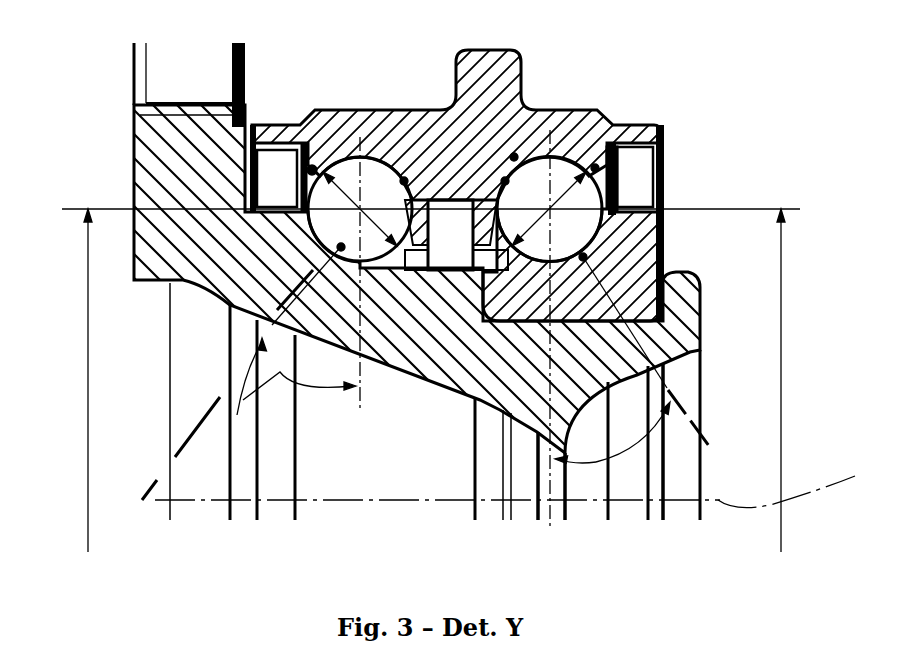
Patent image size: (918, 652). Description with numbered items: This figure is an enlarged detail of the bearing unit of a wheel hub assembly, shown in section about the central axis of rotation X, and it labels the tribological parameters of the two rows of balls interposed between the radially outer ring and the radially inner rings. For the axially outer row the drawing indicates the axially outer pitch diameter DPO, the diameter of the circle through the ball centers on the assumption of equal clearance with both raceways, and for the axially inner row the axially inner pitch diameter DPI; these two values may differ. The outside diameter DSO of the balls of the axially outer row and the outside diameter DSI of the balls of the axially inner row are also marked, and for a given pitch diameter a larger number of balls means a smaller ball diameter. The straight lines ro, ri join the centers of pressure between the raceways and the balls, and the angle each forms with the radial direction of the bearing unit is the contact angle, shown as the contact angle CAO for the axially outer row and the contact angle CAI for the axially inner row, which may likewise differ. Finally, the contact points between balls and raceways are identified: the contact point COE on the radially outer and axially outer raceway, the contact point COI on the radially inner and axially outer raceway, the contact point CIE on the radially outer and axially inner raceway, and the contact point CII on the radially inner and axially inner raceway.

The contact point COI is at (283, 230).
The contact point COE is at (384, 156).
The contact point CII is at (584, 253).
The contact point CIE is at (514, 153).
The outside diameter of the balls of the axially outer row DSO is at (346, 188).
The outside diameter of the balls of the axially inner row DSI is at (568, 186).
The axially outer pitch diameter DPO is at (67, 380).
The axially inner pitch diameter DPI is at (765, 380).
The straight line joining the centers of pressure ro is at (185, 453).
The straight line joining the centers of pressure ri is at (696, 405).
The contact angle of the axially outer row CAO is at (237, 415).
The contact angle of the axially inner row CAI is at (596, 462).
The central axis of rotation X is at (517, 484).